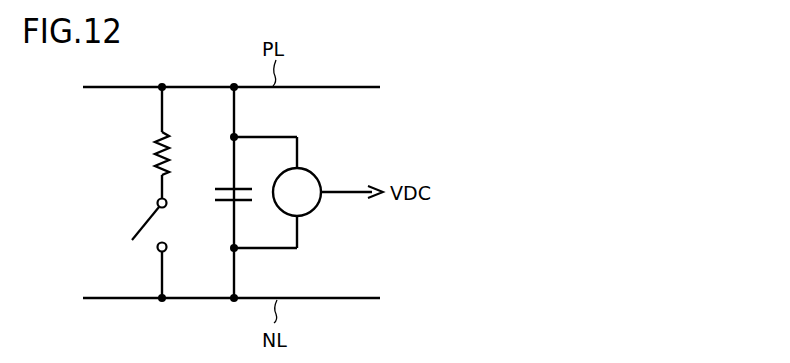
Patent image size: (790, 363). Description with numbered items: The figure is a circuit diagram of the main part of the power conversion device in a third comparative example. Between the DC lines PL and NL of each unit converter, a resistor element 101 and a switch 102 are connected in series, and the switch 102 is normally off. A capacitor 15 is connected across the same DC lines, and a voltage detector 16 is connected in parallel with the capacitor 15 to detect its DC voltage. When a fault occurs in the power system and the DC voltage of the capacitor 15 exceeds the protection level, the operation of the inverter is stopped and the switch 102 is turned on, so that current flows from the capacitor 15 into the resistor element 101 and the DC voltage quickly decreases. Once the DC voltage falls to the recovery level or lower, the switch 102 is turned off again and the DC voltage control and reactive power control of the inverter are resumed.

The resistor element 101 is at (157, 153).
The switch 102 is at (150, 211).
The capacitor 15 is at (246, 187).
The voltage detector 16 is at (313, 169).